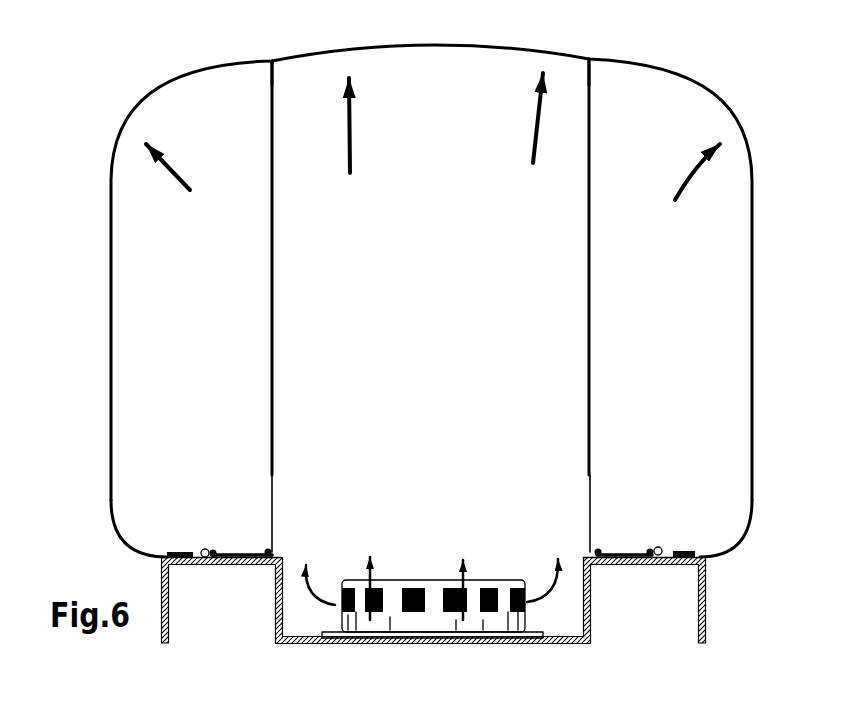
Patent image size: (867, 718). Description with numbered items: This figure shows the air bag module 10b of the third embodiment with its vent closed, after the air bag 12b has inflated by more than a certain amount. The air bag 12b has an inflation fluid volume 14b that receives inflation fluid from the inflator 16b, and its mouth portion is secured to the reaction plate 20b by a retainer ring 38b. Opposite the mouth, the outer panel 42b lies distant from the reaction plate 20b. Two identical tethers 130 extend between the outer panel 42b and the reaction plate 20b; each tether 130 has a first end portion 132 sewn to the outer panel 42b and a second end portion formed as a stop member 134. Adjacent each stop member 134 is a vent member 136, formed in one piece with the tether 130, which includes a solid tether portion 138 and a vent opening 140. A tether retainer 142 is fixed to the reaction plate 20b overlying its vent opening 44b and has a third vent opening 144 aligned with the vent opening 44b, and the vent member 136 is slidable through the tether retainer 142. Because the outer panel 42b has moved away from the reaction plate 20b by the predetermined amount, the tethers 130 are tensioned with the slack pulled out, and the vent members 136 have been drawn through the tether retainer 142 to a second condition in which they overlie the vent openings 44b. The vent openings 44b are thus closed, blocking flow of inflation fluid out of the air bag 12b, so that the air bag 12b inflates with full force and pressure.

The air bag module 10b is at (77, 380).
The air bag 12b is at (100, 326).
The inflation fluid volume 14b is at (428, 285).
The inflator 16b is at (419, 565).
The reaction plate 20b is at (717, 612).
The retainer ring 38b is at (685, 553).
The outer panel 42b is at (427, 47).
The vent opening 44b is at (620, 559).
The tether 130 is at (260, 338).
The first end portion 132 is at (271, 78).
The stop member 134 is at (204, 549).
The vent member 136 is at (237, 544).
The solid tether portion 138 is at (242, 560).
The vent opening 140 is at (275, 498).
The tether retainer 142 is at (598, 548).
The third vent opening 144 is at (630, 553).